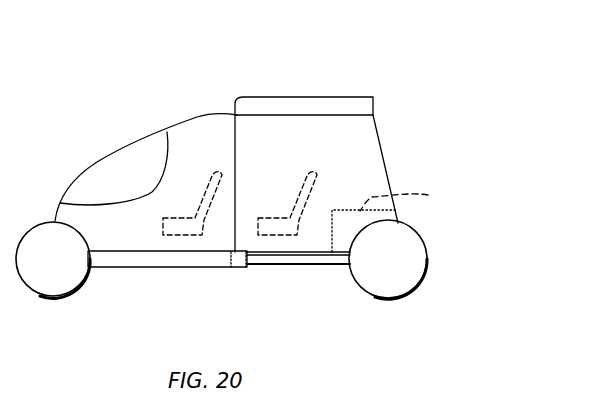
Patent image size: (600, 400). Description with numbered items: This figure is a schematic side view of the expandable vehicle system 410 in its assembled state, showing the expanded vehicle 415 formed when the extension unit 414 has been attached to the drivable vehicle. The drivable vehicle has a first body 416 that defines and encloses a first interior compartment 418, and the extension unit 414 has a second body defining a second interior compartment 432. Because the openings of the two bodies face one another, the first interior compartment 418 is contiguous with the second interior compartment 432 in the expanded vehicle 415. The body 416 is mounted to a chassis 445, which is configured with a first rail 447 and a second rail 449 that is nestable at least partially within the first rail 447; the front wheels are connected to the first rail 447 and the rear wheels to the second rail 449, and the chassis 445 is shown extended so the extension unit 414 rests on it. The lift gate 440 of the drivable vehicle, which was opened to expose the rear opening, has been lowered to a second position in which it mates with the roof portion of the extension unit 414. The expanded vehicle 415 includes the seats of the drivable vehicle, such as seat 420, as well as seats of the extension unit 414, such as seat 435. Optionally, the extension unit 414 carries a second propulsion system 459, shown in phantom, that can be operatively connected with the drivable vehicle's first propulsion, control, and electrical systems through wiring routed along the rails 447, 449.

The expandable vehicle system 410 is at (443, 62).
The extension unit 414 is at (385, 175).
The expanded vehicle 415 is at (197, 117).
The first body 416 is at (97, 162).
The first interior compartment 418 is at (218, 157).
The seat 420 is at (157, 130).
The second interior compartment 432 is at (349, 157).
The seat 435 is at (298, 195).
The lift gate 440 is at (300, 97).
The chassis 445 is at (199, 288).
The first rail 447 is at (133, 268).
The second rail 449 is at (337, 115).
The second propulsion system 459 is at (431, 195).